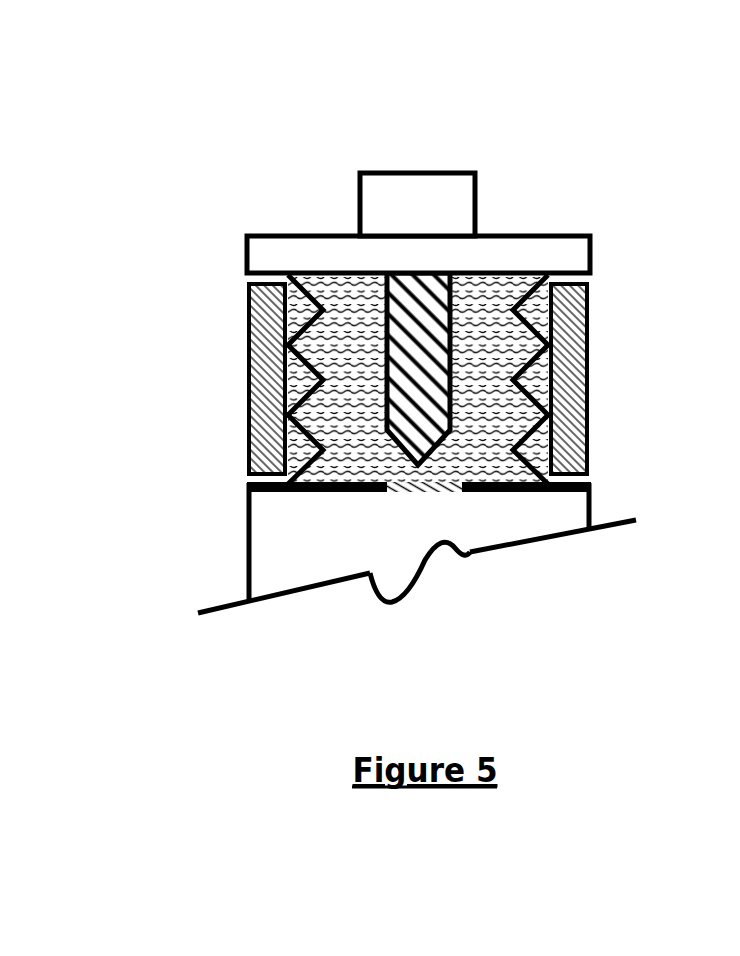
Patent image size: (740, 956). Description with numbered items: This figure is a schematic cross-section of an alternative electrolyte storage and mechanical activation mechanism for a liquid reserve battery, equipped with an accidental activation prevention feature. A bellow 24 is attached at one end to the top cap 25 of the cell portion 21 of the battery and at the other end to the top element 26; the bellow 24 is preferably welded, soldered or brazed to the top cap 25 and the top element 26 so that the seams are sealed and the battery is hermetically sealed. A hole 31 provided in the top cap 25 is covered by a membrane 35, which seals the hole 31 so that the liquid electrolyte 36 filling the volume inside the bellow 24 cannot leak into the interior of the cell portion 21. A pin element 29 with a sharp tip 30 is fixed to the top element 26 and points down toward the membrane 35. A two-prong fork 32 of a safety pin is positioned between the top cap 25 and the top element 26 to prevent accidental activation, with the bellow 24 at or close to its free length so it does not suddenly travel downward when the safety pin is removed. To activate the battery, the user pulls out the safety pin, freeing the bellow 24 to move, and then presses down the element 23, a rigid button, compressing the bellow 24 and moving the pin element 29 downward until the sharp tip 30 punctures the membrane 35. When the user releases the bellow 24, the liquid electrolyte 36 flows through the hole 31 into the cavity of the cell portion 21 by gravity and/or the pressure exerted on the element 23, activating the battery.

The cell portion 21 is at (223, 550).
The element 23 is at (411, 147).
The bellow 24 is at (514, 350).
The top cap 25 is at (538, 515).
The top element 26 is at (293, 214).
The pin element 29 is at (467, 286).
The sharp tip 30 is at (373, 338).
The hole 31 is at (453, 525).
The two-prong fork 32 is at (225, 404).
The membrane 35 is at (405, 511).
The liquid electrolyte 36 is at (503, 412).